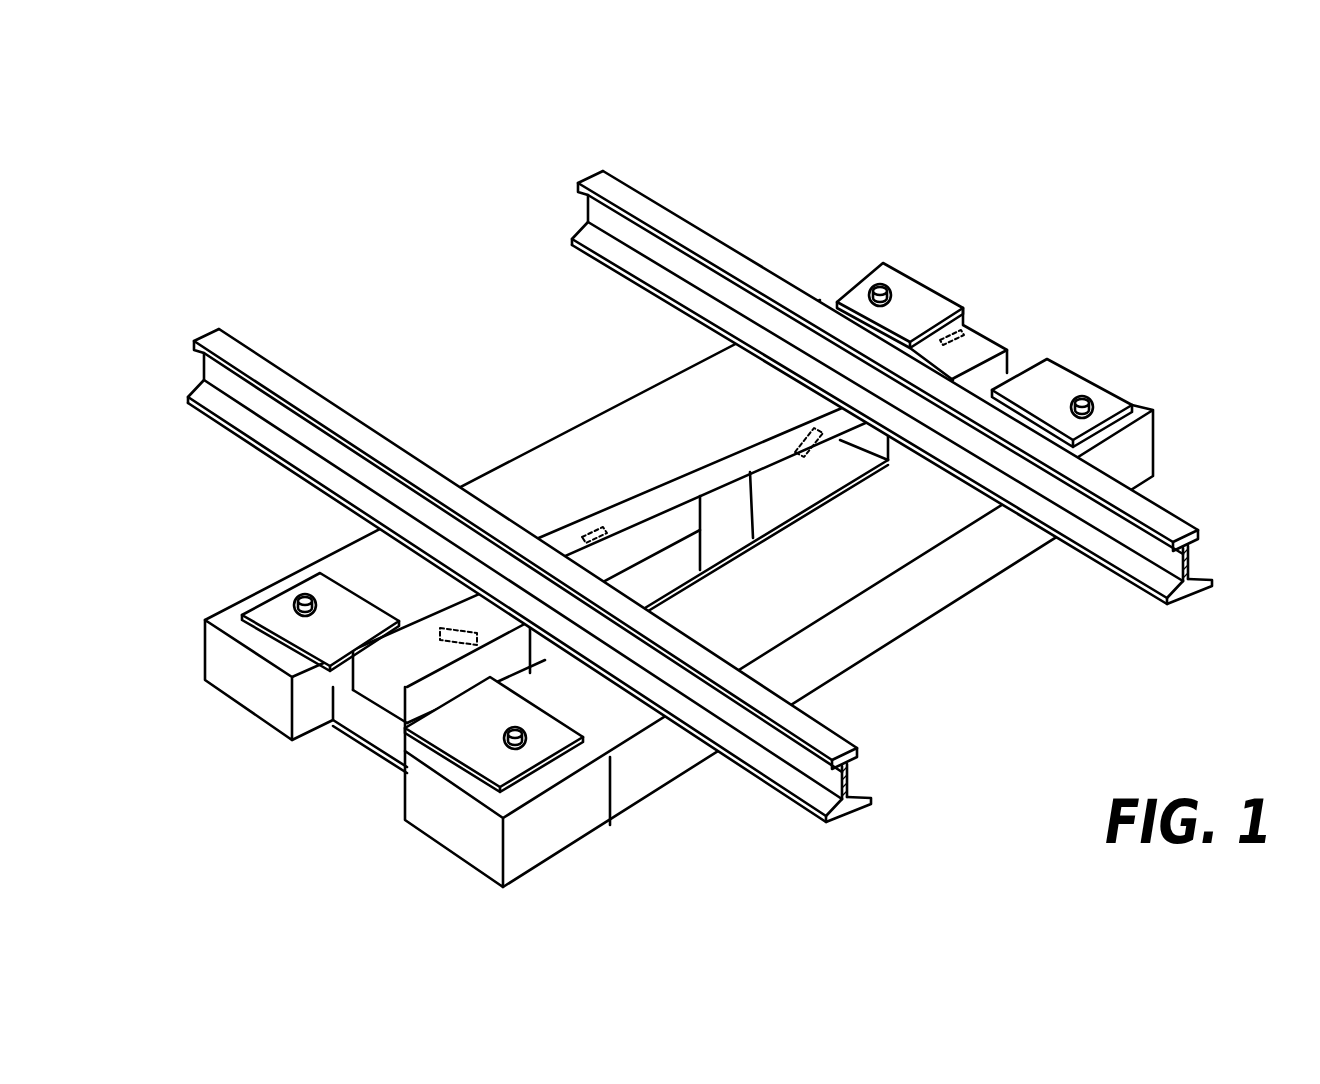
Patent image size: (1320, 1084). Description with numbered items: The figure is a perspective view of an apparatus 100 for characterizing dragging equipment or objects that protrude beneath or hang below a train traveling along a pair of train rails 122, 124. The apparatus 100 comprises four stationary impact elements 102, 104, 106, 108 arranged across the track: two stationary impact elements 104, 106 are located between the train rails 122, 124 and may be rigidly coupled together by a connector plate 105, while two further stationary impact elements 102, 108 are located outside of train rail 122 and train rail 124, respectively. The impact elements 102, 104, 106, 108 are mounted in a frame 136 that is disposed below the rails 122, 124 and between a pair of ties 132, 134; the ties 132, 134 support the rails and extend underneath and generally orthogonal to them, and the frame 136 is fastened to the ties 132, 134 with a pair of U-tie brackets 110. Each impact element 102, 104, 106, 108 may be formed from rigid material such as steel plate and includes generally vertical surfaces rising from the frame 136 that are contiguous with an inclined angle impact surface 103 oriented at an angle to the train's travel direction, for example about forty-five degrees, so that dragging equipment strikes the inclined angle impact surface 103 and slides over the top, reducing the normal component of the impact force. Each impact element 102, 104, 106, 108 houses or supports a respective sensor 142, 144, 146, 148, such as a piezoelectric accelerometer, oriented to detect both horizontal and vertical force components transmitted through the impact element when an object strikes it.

The apparatus 100 is at (750, 160).
The stationary impact element 102 is at (413, 700).
The inclined angle impact surface 103 is at (300, 727).
The stationary impact element 104 is at (643, 573).
The connector plate 105 is at (733, 523).
The stationary impact element 106 is at (848, 455).
The stationary impact element 108 is at (978, 310).
The U-tie bracket 110 is at (268, 605).
The train rail 122 is at (850, 805).
The train rail 124 is at (1205, 590).
The tie 132 is at (540, 850).
The tie 134 is at (215, 660).
The frame 136 is at (347, 745).
The sensor 142 is at (440, 635).
The sensor 144 is at (600, 528).
The sensor 146 is at (812, 447).
The sensor 148 is at (952, 338).